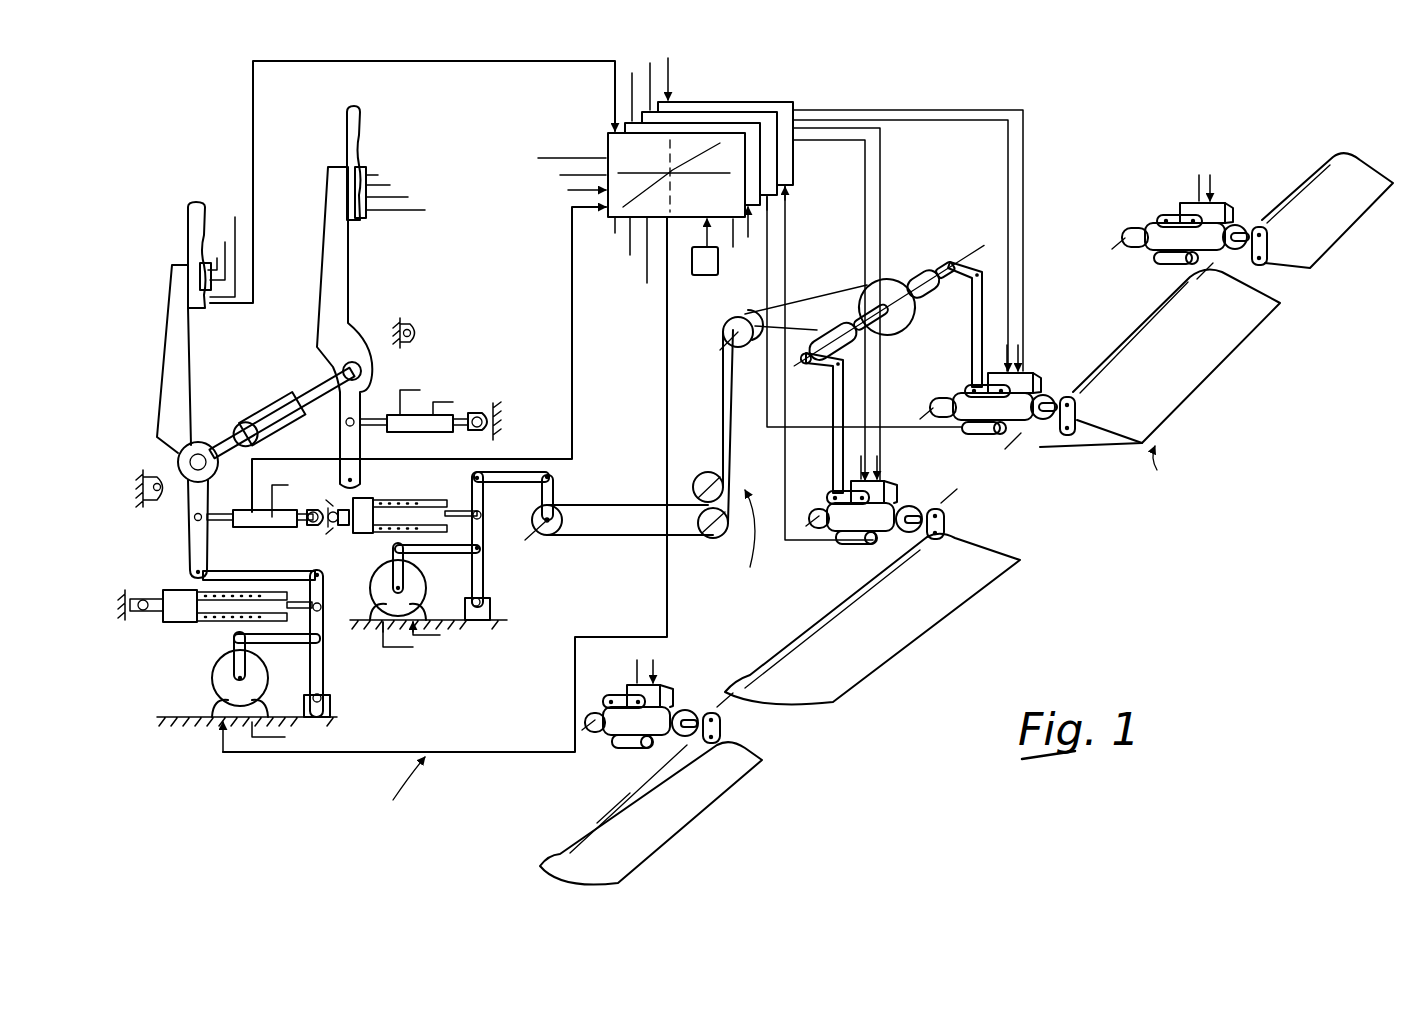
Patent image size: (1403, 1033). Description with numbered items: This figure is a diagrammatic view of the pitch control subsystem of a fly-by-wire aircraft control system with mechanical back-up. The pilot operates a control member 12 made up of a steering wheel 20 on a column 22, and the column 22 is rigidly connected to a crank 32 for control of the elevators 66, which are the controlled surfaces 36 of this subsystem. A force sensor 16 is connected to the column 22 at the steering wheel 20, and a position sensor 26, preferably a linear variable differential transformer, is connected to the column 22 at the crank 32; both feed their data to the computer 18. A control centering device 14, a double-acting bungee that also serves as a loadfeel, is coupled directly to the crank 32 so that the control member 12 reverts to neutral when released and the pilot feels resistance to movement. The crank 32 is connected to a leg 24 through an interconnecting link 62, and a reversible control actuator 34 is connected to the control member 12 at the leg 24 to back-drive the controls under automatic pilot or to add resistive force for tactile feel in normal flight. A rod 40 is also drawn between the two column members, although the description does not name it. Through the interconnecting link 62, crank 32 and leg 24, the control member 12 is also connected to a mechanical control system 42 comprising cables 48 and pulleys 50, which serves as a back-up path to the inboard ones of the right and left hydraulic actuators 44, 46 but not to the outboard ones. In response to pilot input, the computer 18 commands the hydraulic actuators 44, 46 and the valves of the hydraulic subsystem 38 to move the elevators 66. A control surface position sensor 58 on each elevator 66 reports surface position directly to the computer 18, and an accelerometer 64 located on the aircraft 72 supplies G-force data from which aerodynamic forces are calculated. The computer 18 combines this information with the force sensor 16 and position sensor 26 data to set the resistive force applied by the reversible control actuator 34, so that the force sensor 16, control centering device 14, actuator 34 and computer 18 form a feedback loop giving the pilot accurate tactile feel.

The control member 12 is at (318, 178).
The control centering device 14 is at (375, 533).
The force sensor 16 is at (368, 215).
The computer 18 is at (758, 102).
The steering wheel 20 is at (365, 125).
The column 22 is at (352, 326).
The leg 24 is at (332, 688).
The position sensor 26 is at (413, 413).
The crank 32 is at (185, 572).
The reversible control actuator 34 is at (210, 678).
The controlled surfaces 36 is at (1137, 459).
The hydraulic subsystem 38 is at (1033, 355).
The interconnecting rod 40 is at (278, 410).
The mechanical control system 42 is at (793, 442).
The right hydraulic actuator 44 is at (1058, 383).
The left hydraulic actuator 46 is at (920, 500).
The cables 48 is at (632, 540).
The pulleys 50 is at (710, 470).
The control surface position sensor 58 is at (843, 548).
The interconnecting link 62 is at (512, 473).
The accelerometer 64 is at (710, 276).
The elevators 66 is at (1237, 347).
The aircraft 72 is at (445, 521).